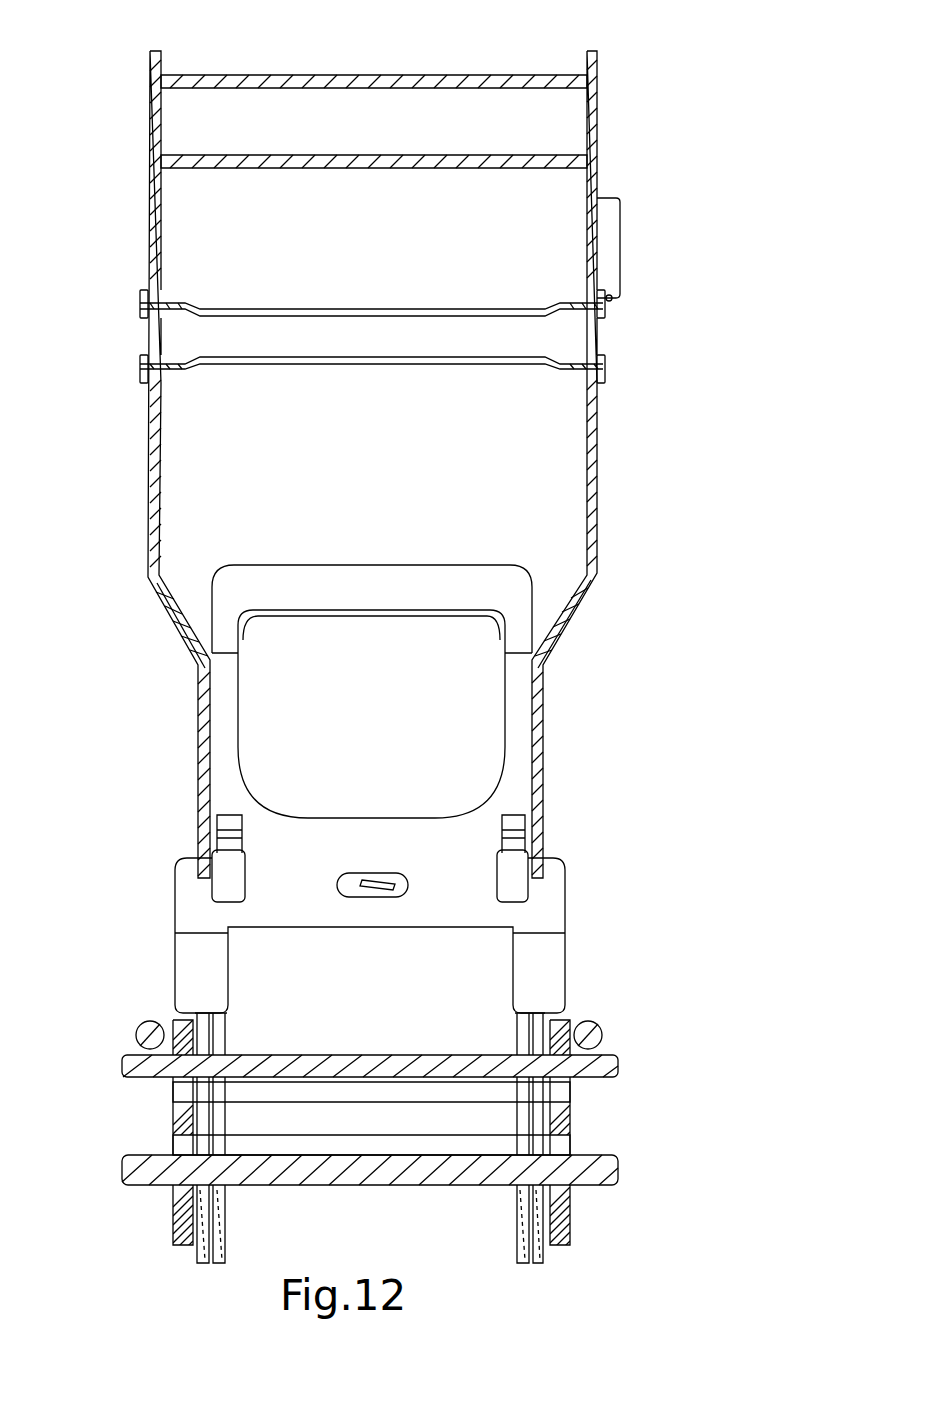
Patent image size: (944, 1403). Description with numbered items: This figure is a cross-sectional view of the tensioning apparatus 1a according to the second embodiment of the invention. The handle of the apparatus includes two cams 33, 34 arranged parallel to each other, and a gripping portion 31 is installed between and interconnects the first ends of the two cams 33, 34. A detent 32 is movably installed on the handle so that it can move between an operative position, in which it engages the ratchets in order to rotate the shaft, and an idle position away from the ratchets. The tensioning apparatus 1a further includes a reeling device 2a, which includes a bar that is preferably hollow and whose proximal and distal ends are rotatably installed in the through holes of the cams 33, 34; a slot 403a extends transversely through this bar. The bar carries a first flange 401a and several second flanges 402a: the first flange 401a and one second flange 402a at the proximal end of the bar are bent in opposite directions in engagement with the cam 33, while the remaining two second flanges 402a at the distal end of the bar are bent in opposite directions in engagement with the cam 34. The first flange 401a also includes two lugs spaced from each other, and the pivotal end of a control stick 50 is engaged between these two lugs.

The gripping portion 31 is at (338, 115).
The control stick 50 is at (607, 228).
The first flange 401a is at (600, 314).
The second flange 402a is at (140, 297).
The slot 403a is at (388, 342).
The reeling device 2a is at (258, 370).
The cam 34 is at (148, 462).
The cam 33 is at (598, 494).
The detent 32 is at (283, 585).
The tensioning apparatus 1a is at (682, 1142).